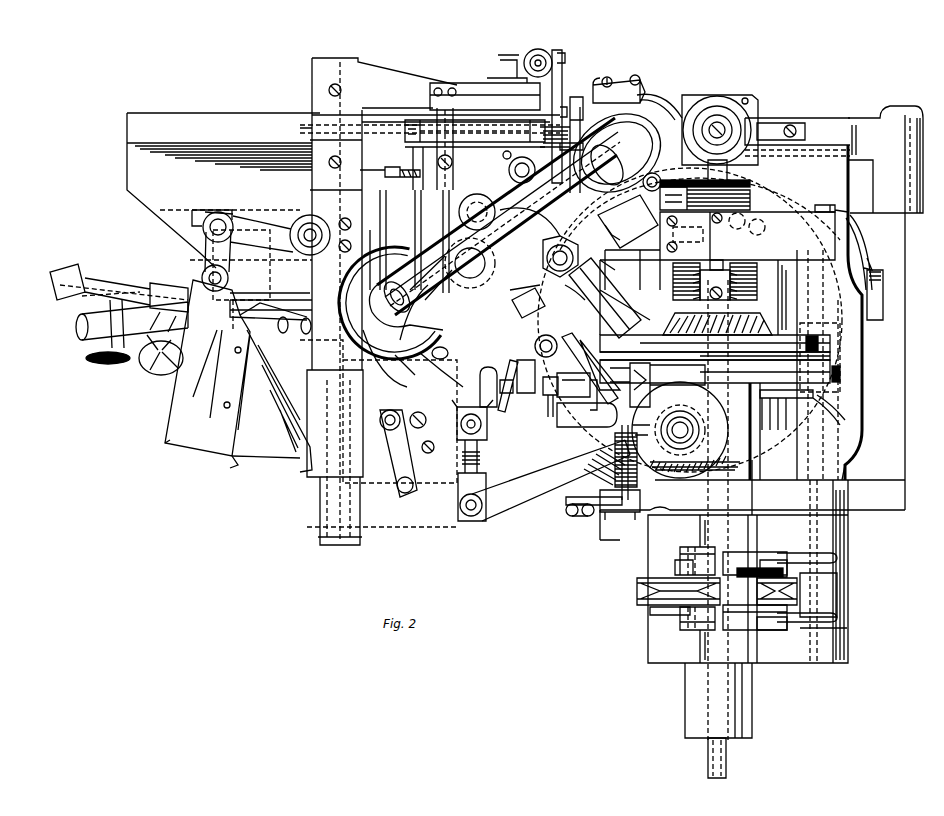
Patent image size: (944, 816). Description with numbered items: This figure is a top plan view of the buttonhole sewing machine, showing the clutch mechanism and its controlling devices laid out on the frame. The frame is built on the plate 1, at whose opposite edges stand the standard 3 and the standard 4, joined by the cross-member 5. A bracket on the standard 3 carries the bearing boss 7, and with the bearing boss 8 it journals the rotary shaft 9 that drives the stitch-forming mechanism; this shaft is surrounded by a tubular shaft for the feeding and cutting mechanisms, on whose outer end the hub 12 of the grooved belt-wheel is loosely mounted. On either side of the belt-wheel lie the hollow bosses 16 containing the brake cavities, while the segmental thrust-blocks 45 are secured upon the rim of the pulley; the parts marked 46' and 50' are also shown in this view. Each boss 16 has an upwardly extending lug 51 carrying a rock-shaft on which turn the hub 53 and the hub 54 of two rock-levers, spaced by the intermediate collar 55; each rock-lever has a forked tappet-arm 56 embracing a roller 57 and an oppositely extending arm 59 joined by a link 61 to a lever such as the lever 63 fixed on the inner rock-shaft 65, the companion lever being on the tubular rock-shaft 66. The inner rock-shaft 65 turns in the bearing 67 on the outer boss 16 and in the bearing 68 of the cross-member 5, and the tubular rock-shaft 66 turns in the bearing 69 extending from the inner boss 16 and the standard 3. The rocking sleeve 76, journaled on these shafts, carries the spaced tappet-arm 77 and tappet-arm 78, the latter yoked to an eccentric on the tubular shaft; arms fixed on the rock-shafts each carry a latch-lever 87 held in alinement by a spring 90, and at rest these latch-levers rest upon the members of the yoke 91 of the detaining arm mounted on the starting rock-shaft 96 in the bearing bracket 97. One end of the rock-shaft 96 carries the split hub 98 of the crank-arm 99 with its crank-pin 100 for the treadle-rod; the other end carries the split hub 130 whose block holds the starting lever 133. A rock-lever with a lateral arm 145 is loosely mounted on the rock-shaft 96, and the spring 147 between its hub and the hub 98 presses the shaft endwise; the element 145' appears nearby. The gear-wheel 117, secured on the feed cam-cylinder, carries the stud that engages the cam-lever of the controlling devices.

The plate 1 is at (912, 374).
The standard 3 is at (752, 510).
The standard 4 is at (830, 125).
The cross-member 5 is at (786, 452).
The bearing boss 7 is at (685, 704).
The bearing boss 8 is at (760, 278).
The rotary shaft 9 is at (726, 762).
The hub 12 is at (715, 343).
The hollow bosses 16 is at (748, 571).
The segmental thrust-blocks 45 is at (640, 603).
The collar 46' is at (655, 617).
The bracket 50' is at (885, 155).
The upwardly extending lug 51 is at (748, 640).
The hub 53 is at (752, 620).
The hub 54 is at (755, 561).
The intermediate collar 55 is at (762, 591).
The tappet-arm 56 is at (740, 571).
The roller 57 is at (682, 622).
The arms 59 is at (778, 630).
The link 61 is at (797, 566).
The lever 63 is at (812, 622).
The inner rock-shaft 65 is at (838, 605).
The tubular rock-shaft 66 is at (864, 410).
The bearing 67 is at (845, 628).
The bearing 68 is at (850, 232).
The bearing 69 is at (848, 530).
The rocking sleeve 76 is at (852, 447).
The tappet-arm 77 is at (787, 398).
The tappet-arm 78 is at (715, 359).
The latch-lever 87 is at (715, 372).
The spring 90 is at (818, 343).
The yoke 91 is at (657, 385).
The starting rock-shaft 96 is at (606, 478).
The bearing bracket 97 is at (630, 297).
The split hub 98 is at (620, 520).
The crank-arm 99 is at (610, 508).
The crank-pin 100 is at (580, 517).
The gear-wheel 117 is at (812, 250).
The split hub 130 is at (629, 242).
The starting lever 133 is at (498, 185).
The lateral arm 145 is at (585, 410).
The block 145' is at (538, 409).
The spring 147 is at (610, 462).